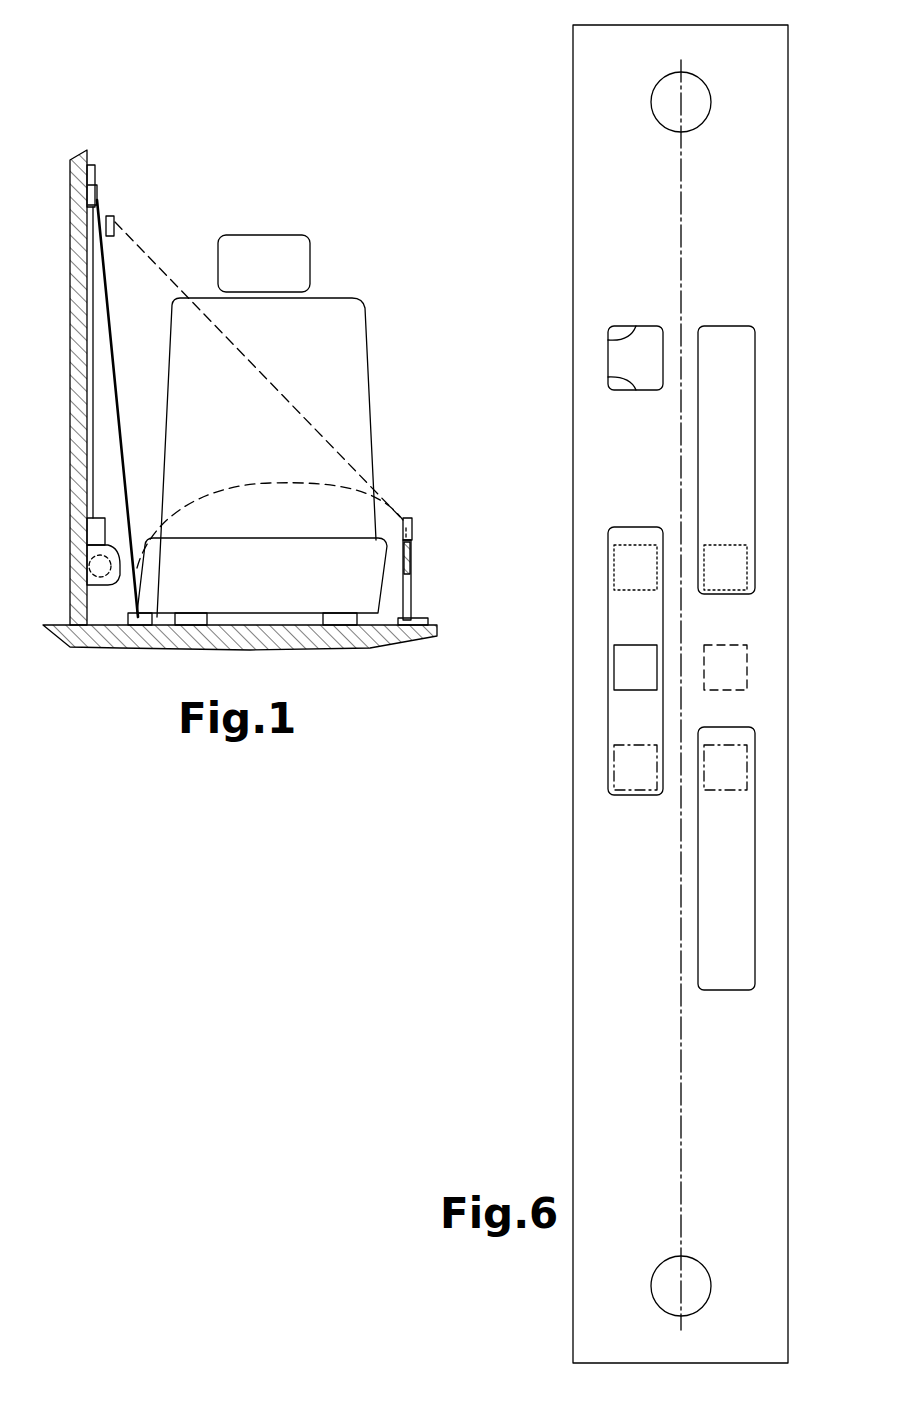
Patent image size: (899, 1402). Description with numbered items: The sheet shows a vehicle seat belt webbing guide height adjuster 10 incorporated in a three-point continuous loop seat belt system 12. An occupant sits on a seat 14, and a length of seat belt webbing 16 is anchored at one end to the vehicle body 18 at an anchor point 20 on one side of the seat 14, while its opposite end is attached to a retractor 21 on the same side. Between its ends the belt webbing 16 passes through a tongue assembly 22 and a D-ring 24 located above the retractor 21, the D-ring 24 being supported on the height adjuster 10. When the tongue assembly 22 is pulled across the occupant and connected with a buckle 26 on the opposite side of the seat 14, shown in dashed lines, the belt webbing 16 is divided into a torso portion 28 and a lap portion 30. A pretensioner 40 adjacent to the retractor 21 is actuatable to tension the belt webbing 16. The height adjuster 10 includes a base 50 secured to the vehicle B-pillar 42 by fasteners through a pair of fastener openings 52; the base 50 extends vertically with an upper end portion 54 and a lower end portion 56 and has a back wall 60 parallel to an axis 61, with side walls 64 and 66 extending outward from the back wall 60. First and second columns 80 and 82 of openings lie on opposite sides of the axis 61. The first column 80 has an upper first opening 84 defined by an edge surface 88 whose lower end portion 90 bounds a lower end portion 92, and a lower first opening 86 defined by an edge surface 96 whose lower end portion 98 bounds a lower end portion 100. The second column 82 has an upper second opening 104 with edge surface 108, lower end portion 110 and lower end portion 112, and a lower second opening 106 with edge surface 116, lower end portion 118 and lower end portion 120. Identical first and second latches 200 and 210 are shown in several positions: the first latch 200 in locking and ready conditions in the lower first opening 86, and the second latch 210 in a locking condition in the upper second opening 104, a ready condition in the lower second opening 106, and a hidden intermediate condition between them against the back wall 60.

In FIG. 1, the seat belt webbing guide height adjuster 10 is at (103, 172).
In FIG. 6, the seat belt webbing guide height adjuster 10 is at (510, 888).
In FIG. 1, the seat belt system 12 is at (352, 250).
In FIG. 1, the seat 14 is at (350, 296).
In FIG. 1, the seat belt webbing 16 is at (125, 392).
In FIG. 1, the vehicle body 18 is at (72, 640).
In FIG. 1, the anchor point 20 is at (148, 612).
In FIG. 1, the retractor 21 is at (100, 566).
In FIG. 1, the tongue assembly 22 is at (112, 220).
In FIG. 1, the D-ring 24 is at (98, 191).
In FIG. 1, the buckle 26 is at (411, 574).
In FIG. 1, the torso portion 28 is at (305, 410).
In FIG. 1, the lap portion 30 is at (290, 480).
In FIG. 1, the pretensioner 40 is at (98, 528).
In FIG. 1, the vehicle B-pillar 42 is at (82, 347).
In FIG. 6, the base 50 is at (571, 987).
In FIG. 6, the fastener openings 52 is at (709, 91).
In FIG. 6, the upper end portion 54 is at (573, 70).
In FIG. 6, the lower end portion 56 is at (573, 1333).
In FIG. 6, the back wall 60 is at (737, 1112).
In FIG. 6, the axis 61 is at (681, 1097).
In FIG. 6, the side wall 64 is at (572, 212).
In FIG. 6, the side wall 66 is at (790, 200).
In FIG. 6, the first column of locking features 80 is at (637, 298).
In FIG. 6, the second column of locking features 82 is at (725, 298).
In FIG. 6, the upper first opening 84 is at (606, 360).
In FIG. 6, the lower first opening 86 is at (606, 532).
In FIG. 6, the edge surface 88 is at (612, 338).
In FIG. 6, the lower end portion of edge surface 90 is at (612, 380).
In FIG. 6, the lower end portion of upper first opening 92 is at (648, 368).
In FIG. 6, the edge surface 96 is at (660, 605).
In FIG. 6, the lower end portion of edge surface 98 is at (640, 790).
In FIG. 6, the lower end portion of lower first opening 100 is at (635, 722).
In FIG. 6, the upper second opening 104 is at (752, 458).
In FIG. 6, the lower second opening 106 is at (752, 852).
In FIG. 6, the edge surface 108 is at (702, 442).
In FIG. 6, the lower end portion of edge surface 110 is at (705, 592).
In FIG. 6, the lower end portion of upper second opening 112 is at (725, 503).
In FIG. 6, the edge surface 116 is at (700, 888).
In FIG. 6, the lower end portion of edge surface 118 is at (710, 990).
In FIG. 6, the lower end portion of lower second opening 120 is at (735, 925).
In FIG. 6, the first latch 200 is at (640, 570).
In FIG. 6, the second latch 210 is at (722, 556).